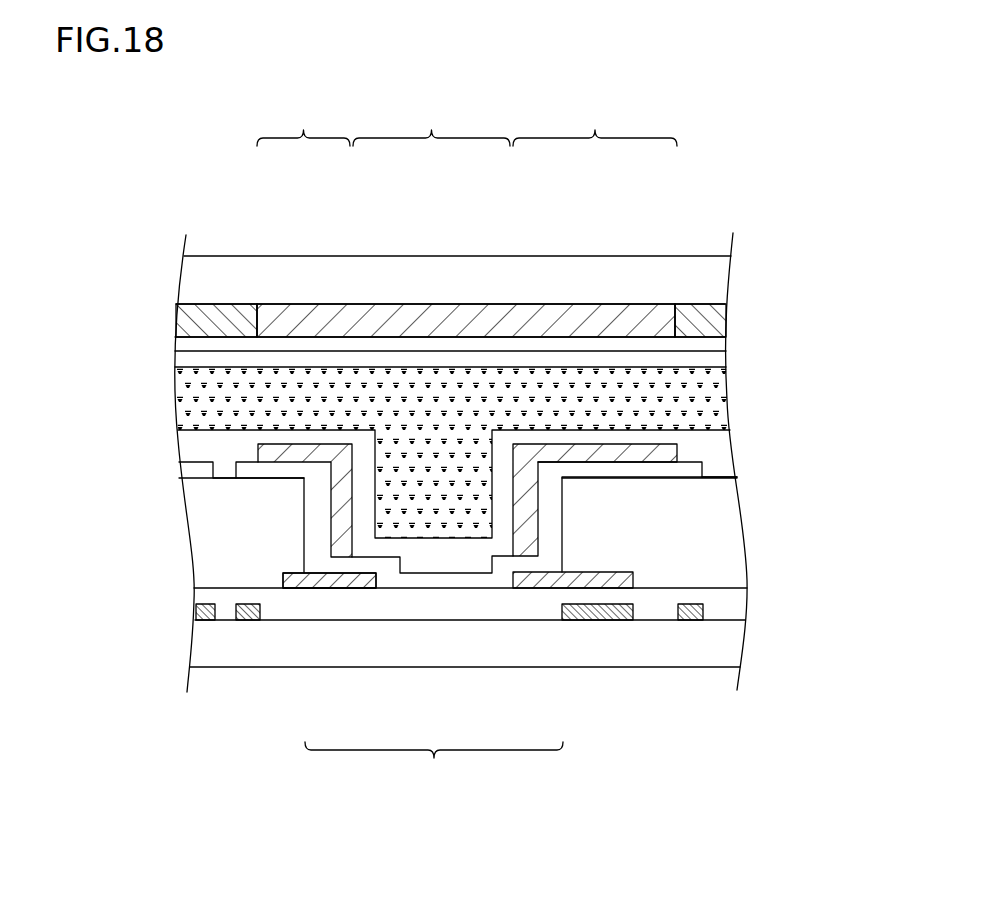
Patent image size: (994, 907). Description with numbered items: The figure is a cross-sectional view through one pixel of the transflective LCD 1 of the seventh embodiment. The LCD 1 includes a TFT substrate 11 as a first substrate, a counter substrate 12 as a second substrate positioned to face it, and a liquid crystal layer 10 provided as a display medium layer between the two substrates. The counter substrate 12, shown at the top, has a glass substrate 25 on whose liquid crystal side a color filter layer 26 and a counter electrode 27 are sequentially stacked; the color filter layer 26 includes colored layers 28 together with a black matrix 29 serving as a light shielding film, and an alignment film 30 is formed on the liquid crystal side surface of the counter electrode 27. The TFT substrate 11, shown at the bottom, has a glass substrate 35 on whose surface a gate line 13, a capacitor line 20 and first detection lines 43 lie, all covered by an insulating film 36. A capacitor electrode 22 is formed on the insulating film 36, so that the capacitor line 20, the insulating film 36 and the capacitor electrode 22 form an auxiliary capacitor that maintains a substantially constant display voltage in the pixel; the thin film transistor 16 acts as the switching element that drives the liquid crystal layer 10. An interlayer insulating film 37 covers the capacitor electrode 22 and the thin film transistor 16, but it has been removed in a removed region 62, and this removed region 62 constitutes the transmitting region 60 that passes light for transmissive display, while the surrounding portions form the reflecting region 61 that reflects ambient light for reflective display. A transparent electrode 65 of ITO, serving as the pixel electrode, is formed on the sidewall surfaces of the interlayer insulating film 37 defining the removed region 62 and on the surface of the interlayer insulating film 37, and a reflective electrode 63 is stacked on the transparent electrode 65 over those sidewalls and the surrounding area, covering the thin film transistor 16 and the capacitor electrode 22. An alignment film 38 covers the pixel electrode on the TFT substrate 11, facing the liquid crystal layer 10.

The LCD 1 is at (182, 218).
The liquid crystal layer 10 is at (180, 394).
The TFT substrate 11 is at (210, 669).
The counter substrate 12 is at (296, 255).
The gate line 13 is at (246, 620).
The thin film transistor 16 is at (314, 589).
The capacitor line 20 is at (605, 620).
The capacitor electrode 22 is at (633, 583).
The glass substrate 25 is at (713, 278).
The color filter layer 26 is at (185, 320).
The counter electrode 27 is at (715, 343).
The colored layer 28 is at (497, 305).
The black matrix 29 is at (725, 320).
The alignment film 30 is at (715, 358).
The glass substrate 35 is at (733, 643).
The insulating film 36 is at (735, 605).
The interlayer insulating film 37 is at (203, 536).
The alignment film 38 is at (692, 469).
The first detection line 43 is at (197, 611).
The transmitting region 60 is at (431, 123).
The reflecting region 61 is at (467, 123).
The removed region 62 is at (434, 766).
The reflective electrode 63 is at (273, 455).
The transparent electrode 65 is at (700, 478).